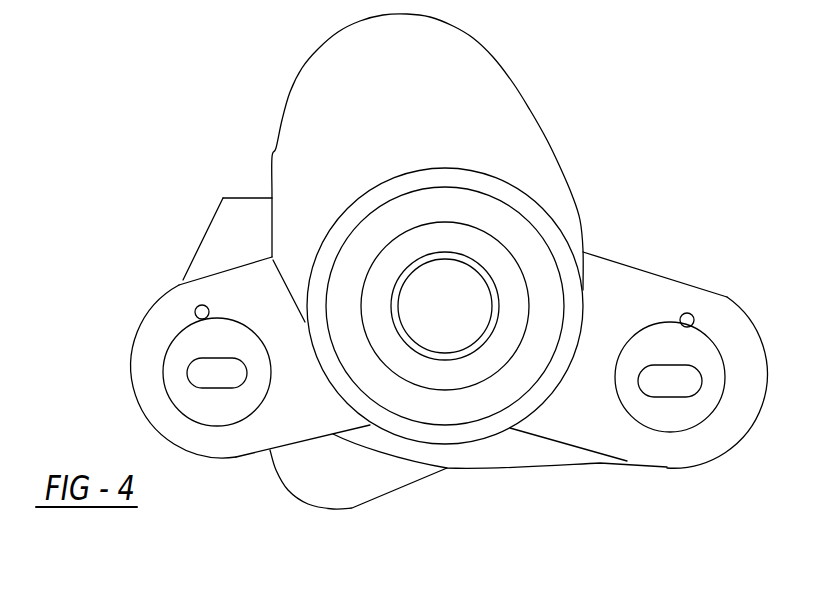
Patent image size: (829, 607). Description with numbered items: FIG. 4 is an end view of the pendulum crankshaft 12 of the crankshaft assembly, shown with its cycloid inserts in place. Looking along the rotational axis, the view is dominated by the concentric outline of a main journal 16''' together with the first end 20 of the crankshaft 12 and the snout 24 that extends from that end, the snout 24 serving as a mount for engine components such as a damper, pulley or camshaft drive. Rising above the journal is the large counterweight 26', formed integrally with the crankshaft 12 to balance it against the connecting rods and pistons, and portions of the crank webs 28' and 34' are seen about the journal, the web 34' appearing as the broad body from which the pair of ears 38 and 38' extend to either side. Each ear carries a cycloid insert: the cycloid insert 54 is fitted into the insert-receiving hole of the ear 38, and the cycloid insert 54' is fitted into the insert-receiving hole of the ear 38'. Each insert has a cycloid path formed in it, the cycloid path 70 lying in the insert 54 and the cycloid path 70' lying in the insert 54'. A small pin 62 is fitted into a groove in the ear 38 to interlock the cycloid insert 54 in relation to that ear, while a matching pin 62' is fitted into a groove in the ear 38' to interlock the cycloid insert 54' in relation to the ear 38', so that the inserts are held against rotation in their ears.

The crankshaft 12 is at (485, 247).
The main journal 16''' is at (475, 261).
The first end 20 is at (483, 400).
The snout 24 is at (507, 265).
The counterweight 26' is at (218, 215).
The crank web 28' is at (468, 493).
The crank web 34' is at (437, 161).
The ear 38 is at (142, 368).
The ear 38' is at (717, 336).
The cycloid insert 54 is at (217, 423).
The cycloid insert 54' is at (670, 428).
The pin 62 is at (158, 269).
The pin 62' is at (723, 277).
The cycloid path 70 is at (148, 388).
The cycloid path 70' is at (701, 439).